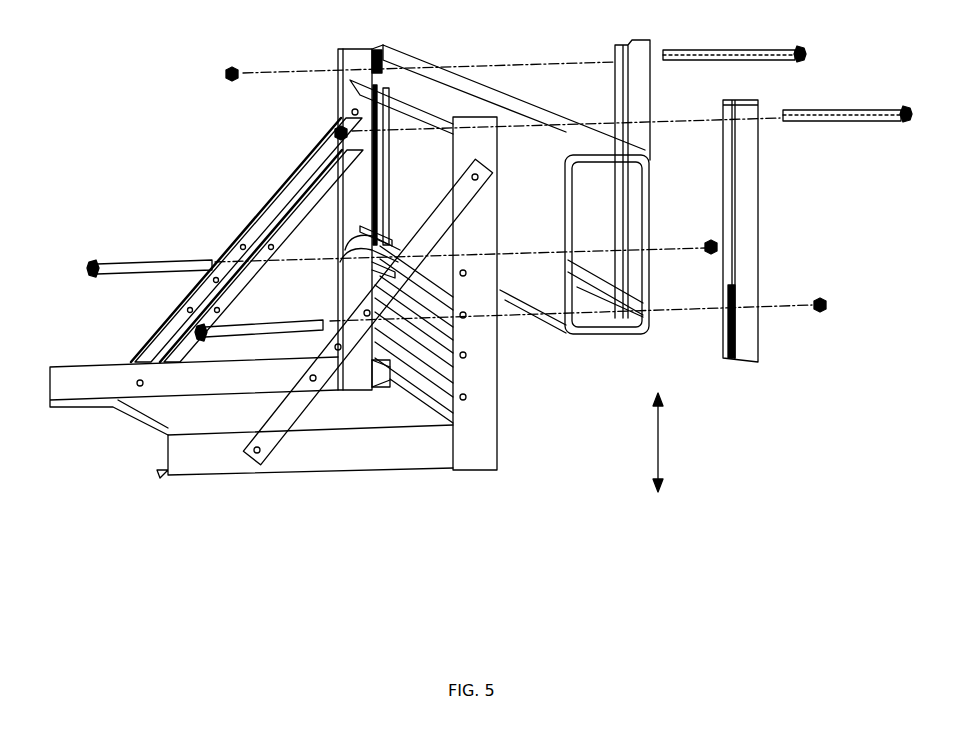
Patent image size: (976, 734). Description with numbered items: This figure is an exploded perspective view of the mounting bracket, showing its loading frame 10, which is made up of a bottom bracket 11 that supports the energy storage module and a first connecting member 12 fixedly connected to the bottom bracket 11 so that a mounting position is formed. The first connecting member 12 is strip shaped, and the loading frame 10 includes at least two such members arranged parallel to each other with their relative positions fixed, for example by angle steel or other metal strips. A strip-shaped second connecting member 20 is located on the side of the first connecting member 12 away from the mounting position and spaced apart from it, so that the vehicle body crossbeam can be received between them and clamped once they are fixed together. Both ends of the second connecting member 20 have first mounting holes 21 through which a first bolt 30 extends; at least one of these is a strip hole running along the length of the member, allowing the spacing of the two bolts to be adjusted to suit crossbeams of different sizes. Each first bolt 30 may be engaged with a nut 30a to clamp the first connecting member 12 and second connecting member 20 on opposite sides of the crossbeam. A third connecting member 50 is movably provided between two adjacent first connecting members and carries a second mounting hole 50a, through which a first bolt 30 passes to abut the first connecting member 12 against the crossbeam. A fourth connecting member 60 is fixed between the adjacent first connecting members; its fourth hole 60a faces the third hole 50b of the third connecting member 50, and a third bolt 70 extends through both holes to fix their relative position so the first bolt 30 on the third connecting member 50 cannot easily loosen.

The loading frame 10 is at (238, 190).
The bottom bracket 11 is at (348, 462).
The first connecting member 12 is at (497, 378).
The second connecting member 20 is at (648, 98).
The first mounting hole 21 is at (745, 110).
The first bolt 30 is at (752, 50).
The nut 30a is at (232, 66).
The third connecting member 50 is at (365, 252).
The second mounting hole 50a is at (372, 268).
The third hole 50b is at (360, 235).
The fourth connecting member 60 is at (397, 233).
The fourth hole 60a is at (330, 185).
The third bolt 70 is at (393, 162).